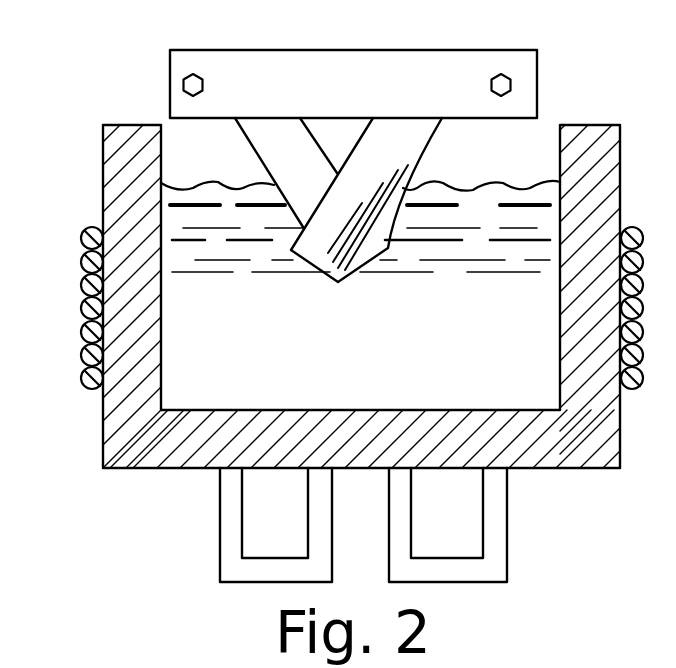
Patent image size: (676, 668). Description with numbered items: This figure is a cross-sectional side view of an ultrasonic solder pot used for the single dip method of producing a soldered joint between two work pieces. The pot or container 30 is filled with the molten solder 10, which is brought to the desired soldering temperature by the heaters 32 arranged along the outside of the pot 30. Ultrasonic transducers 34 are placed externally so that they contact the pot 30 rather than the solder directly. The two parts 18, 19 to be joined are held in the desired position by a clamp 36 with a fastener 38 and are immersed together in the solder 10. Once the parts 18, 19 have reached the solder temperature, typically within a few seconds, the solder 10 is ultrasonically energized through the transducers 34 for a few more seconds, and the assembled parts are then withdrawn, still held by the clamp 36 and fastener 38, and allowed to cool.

The solder 10 is at (374, 362).
The part 18 is at (275, 133).
The part 19 is at (408, 137).
The solder pot 30 is at (118, 150).
The heaters 32 is at (84, 290).
The ultrasonic transducers 34 is at (257, 511).
The clamp 36 is at (348, 56).
The fastener 38 is at (183, 78).